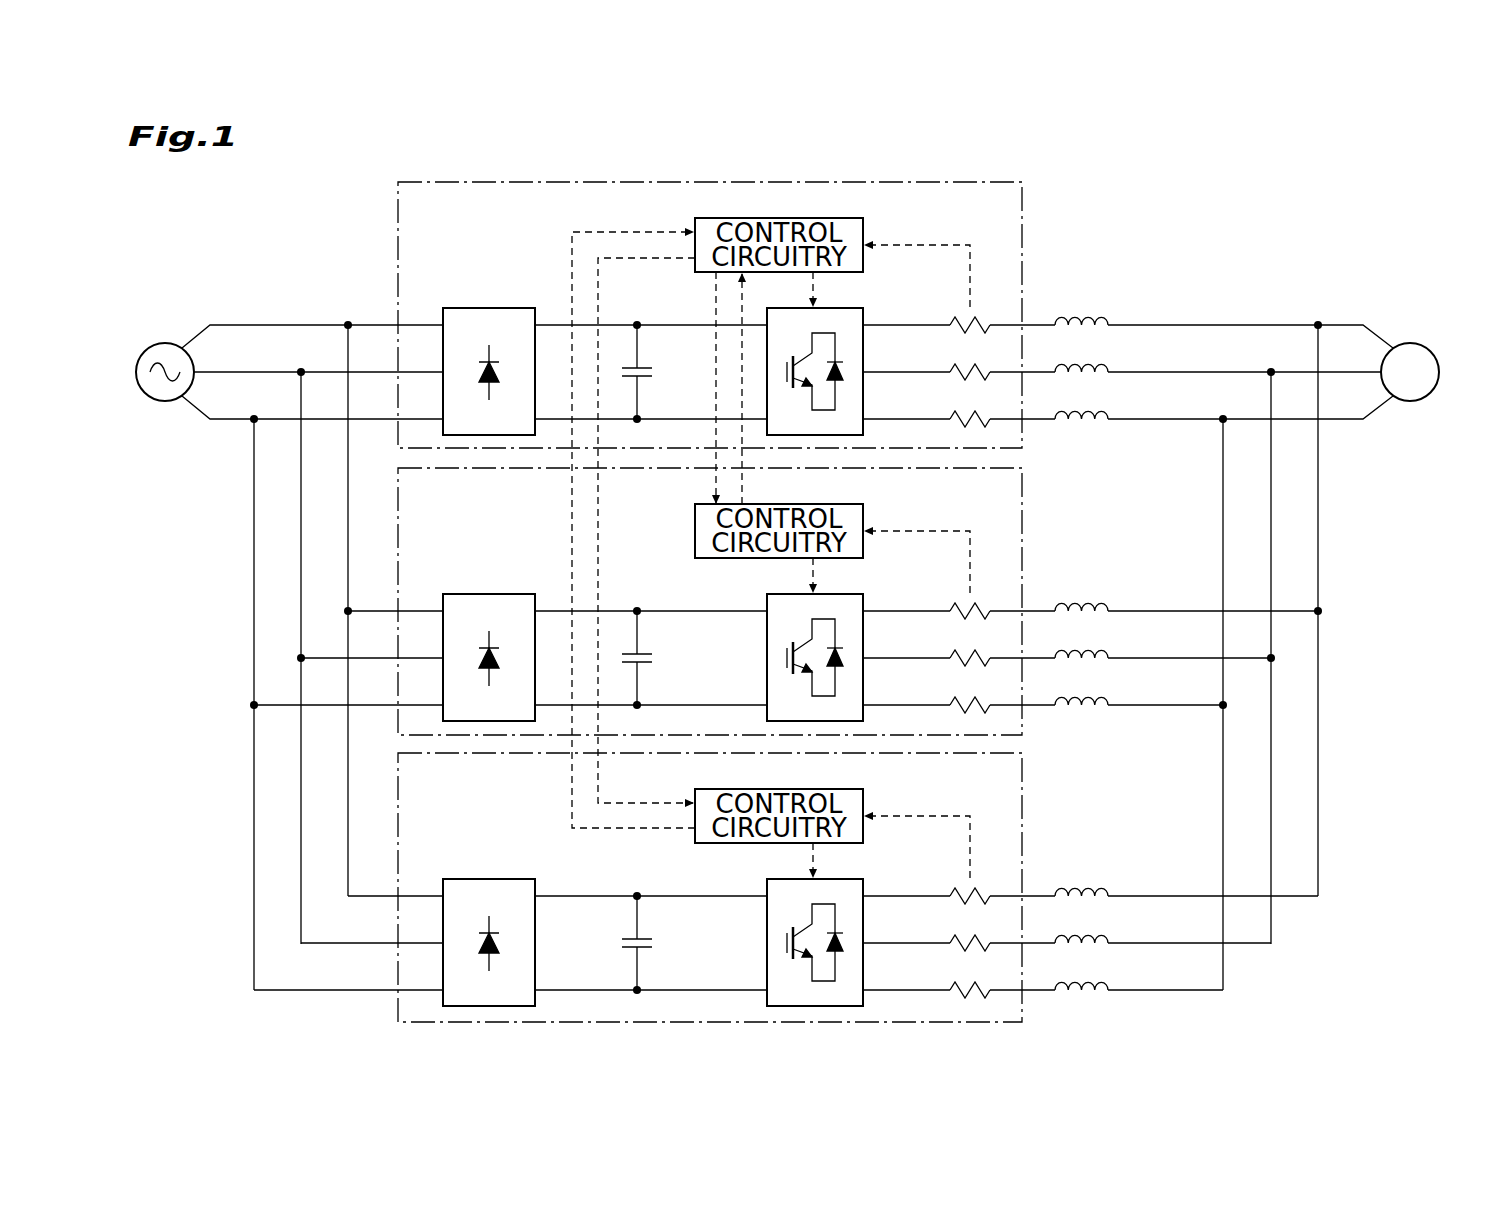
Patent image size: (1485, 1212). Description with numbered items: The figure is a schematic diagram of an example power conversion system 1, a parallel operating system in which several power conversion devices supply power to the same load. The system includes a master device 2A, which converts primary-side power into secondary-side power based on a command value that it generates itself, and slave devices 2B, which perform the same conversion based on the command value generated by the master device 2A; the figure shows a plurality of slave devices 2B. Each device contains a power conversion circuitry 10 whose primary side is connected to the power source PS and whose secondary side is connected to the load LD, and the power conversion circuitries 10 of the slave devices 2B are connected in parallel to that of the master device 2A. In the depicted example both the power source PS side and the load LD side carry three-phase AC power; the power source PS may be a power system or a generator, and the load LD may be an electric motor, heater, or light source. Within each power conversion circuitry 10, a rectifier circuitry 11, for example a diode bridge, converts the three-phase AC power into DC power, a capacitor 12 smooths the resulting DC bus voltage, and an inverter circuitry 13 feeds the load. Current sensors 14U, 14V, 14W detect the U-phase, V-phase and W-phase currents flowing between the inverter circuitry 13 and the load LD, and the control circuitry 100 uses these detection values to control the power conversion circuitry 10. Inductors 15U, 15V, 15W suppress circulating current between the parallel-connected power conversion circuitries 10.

The power conversion system 1 is at (1312, 232).
The master device 2A is at (1022, 190).
The slave device 2B is at (1022, 476).
The power conversion circuitry 10 is at (555, 284).
The rectifier circuitry 11 is at (485, 308).
The capacitor 12 is at (650, 366).
The inverter circuitry 13 is at (825, 308).
The current sensor 14U is at (957, 320).
The current sensor 14V is at (957, 366).
The current sensor 14W is at (957, 414).
The inductor 15U is at (1110, 312).
The inductor 15V is at (1110, 359).
The inductor 15W is at (1110, 406).
The control circuitry 100 is at (782, 218).
The power source PS is at (163, 343).
The load LD is at (1408, 343).